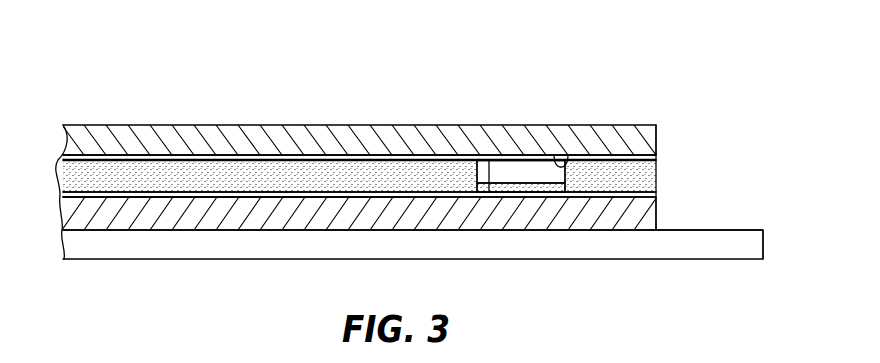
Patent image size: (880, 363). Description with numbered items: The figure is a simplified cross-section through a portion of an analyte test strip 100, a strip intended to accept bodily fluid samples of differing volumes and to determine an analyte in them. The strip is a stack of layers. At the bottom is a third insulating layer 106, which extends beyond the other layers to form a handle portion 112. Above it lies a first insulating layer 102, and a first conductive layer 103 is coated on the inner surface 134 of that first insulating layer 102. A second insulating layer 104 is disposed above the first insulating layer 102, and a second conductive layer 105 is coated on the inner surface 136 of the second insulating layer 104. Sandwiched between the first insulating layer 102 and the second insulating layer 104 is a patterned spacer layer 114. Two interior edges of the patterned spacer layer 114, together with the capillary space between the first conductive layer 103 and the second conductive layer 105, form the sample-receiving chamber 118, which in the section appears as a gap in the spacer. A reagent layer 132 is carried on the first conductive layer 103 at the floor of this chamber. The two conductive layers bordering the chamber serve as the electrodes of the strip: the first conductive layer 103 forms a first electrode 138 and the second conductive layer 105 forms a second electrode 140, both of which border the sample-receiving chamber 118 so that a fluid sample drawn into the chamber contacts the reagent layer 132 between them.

The analyte test strip 100 is at (412, 170).
The first insulating layer 102 is at (243, 220).
The first conductive layer 103 is at (650, 195).
The second insulating layer 104 is at (297, 143).
The second conductive layer 105 is at (650, 158).
The third insulating layer 106 is at (103, 247).
The handle portion 112 is at (723, 230).
The patterned spacer layer 114 is at (58, 166).
The sample-receiving chamber 118 is at (523, 168).
The reagent layer 132 is at (522, 190).
The inner surface of first insulating layer 134 is at (182, 202).
The inner surface of second insulating layer 136 is at (377, 152).
The first electrode 138 is at (488, 183).
The second electrode 140 is at (568, 158).